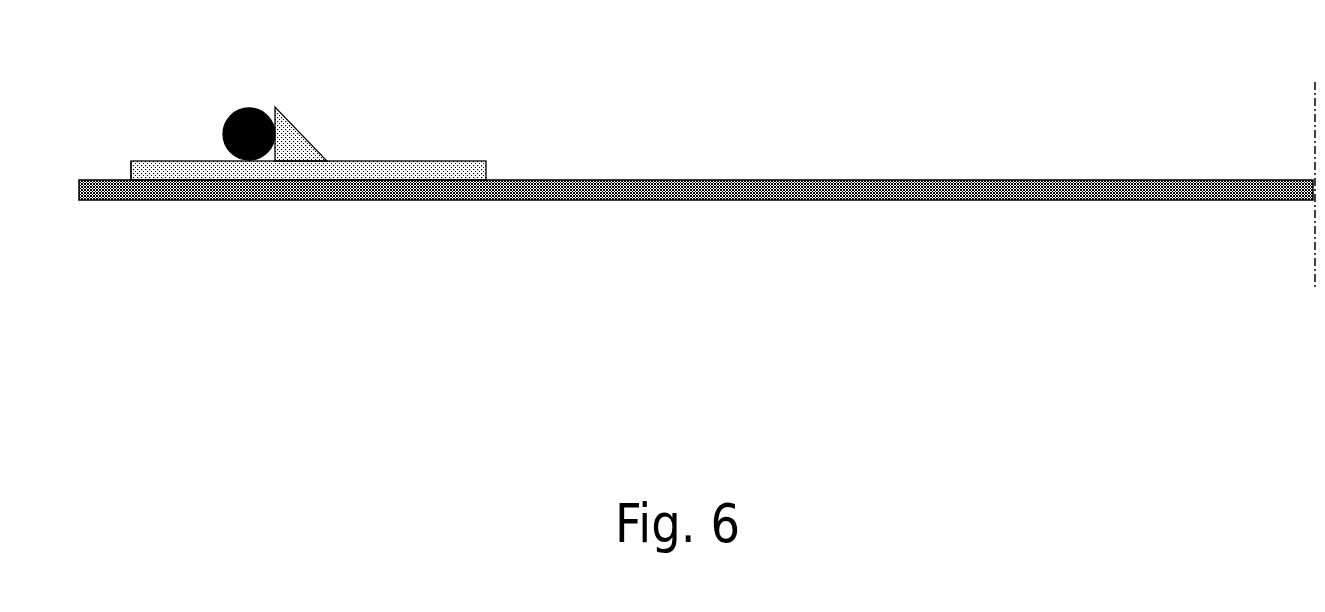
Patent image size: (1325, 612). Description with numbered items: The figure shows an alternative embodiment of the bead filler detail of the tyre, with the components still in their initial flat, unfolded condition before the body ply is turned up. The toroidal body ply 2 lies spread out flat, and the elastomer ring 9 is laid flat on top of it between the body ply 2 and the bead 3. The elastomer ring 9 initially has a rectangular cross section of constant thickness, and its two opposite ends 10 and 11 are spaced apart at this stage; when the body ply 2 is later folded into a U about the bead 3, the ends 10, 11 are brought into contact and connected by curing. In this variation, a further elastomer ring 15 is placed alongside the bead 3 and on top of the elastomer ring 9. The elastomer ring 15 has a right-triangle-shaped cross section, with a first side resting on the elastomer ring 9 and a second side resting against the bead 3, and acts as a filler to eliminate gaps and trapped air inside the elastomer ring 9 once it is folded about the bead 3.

The body ply 2 is at (715, 180).
The bead 3 is at (252, 105).
The elastomer ring 9 is at (406, 134).
The end of elastomer ring 10 is at (473, 173).
The end of elastomer ring 11 is at (144, 173).
The elastomer ring 15 is at (297, 125).